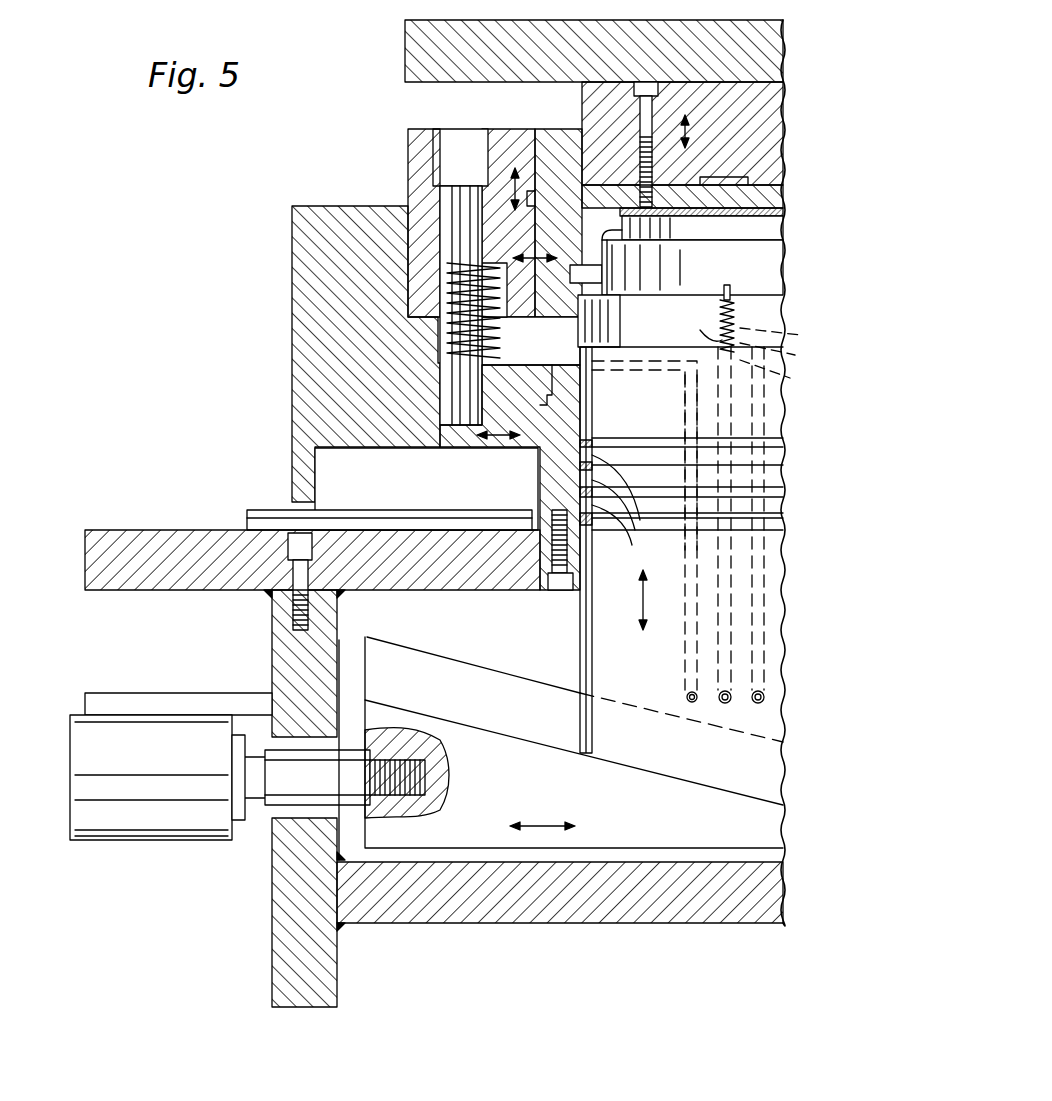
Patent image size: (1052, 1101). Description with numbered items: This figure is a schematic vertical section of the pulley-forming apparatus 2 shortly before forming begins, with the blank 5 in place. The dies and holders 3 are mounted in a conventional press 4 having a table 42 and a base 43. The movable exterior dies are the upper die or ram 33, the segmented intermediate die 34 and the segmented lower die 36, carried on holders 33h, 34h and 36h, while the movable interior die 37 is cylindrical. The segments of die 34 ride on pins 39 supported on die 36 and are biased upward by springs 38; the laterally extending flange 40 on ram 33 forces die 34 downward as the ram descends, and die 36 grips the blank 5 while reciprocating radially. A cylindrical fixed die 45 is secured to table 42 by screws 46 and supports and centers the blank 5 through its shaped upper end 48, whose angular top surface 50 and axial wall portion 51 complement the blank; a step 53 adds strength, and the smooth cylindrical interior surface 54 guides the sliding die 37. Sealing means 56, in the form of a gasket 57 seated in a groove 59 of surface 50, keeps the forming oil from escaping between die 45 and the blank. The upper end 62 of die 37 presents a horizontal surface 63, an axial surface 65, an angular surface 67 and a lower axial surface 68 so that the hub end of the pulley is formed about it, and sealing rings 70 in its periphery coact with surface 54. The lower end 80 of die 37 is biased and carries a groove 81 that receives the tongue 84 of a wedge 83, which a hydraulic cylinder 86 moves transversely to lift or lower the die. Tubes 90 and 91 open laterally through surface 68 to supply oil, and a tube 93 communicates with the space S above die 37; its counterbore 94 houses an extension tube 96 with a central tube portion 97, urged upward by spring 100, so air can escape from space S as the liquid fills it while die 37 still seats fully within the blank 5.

The apparatus 2 is at (178, 523).
The dies and holders 3 is at (790, 131).
The press 4 is at (268, 648).
The blank 5 is at (720, 212).
The space S is at (765, 270).
The die or ram 33 is at (788, 170).
The holder 33h is at (790, 104).
The die 34 is at (548, 129).
The holder 34h is at (408, 131).
The die 36 is at (490, 438).
The holder 36h is at (292, 331).
The interior die 37 is at (580, 650).
The springs 38 is at (500, 327).
The pins 39 is at (455, 190).
The flange or lip 40 is at (407, 84).
The table 42 is at (165, 590).
The base 43 is at (272, 903).
The cylindrical block or fixed die 45 is at (545, 470).
The screws 46 is at (560, 590).
The shaped upper end 48 is at (580, 388).
The top portion or surface 50 is at (572, 370).
The vertical or axial wall portion 51 is at (548, 366).
The step 53 is at (592, 458).
The interior surface 54 is at (580, 495).
The sealing means 56 is at (641, 387).
The O-ring or gasket 57 is at (558, 376).
The groove 59 is at (575, 378).
The upper end 62 is at (785, 322).
The horizontal surface 63 is at (772, 278).
The axially extending surface 65 is at (615, 320).
The angularly extending surface 67 is at (600, 328).
The axial vertical wall portion or surface 68 is at (580, 428).
The sealing rings 70 is at (624, 504).
The lower end 80 is at (758, 798).
The slot, track or groove 81 is at (760, 743).
The wedge 83 is at (574, 752).
The tongue 84 is at (561, 748).
The hydraulic cylinder or motor means 86 is at (247, 766).
The tubes or conduits 90 is at (686, 646).
The tubes or conduits 91 is at (762, 638).
The tube 93 is at (688, 678).
The counterbore 94 is at (699, 325).
The extension tube 96 is at (771, 318).
The central tube portion 97 is at (781, 355).
The spring 100 is at (786, 376).